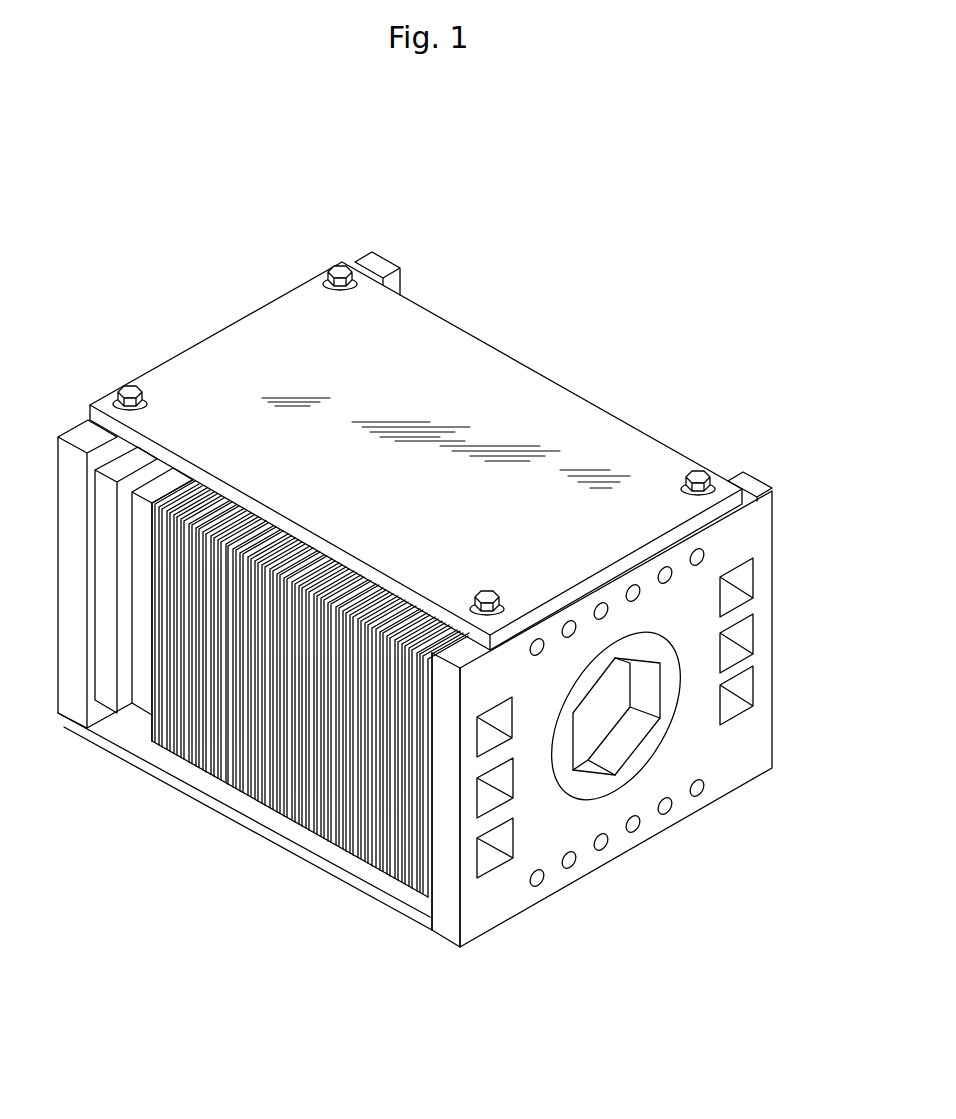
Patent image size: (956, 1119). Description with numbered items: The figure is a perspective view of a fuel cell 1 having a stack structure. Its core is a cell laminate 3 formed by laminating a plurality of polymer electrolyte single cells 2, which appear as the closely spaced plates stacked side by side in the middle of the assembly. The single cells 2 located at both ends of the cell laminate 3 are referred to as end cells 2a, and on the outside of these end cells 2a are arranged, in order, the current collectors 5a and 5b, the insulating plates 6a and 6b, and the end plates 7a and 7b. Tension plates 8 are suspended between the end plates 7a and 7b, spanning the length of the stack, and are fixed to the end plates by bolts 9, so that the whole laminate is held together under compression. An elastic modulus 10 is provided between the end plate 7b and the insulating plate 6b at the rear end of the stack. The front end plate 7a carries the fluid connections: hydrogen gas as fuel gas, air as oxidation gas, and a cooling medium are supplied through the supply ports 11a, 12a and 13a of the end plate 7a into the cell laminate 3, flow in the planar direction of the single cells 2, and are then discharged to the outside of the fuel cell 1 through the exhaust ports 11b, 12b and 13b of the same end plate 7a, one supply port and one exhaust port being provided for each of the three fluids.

The fuel cell 1 is at (168, 303).
The single cell 2 is at (325, 580).
The end cell 2a is at (163, 742).
The cell laminate 3 is at (274, 835).
The current collector 5a is at (415, 895).
The current collector 5b is at (157, 733).
The insulating plate 6a is at (422, 898).
The insulating plate 6b is at (150, 738).
The end plate 7a is at (752, 470).
The end plate 7b is at (385, 262).
The tension plate 8 is at (528, 385).
The bolt 9 is at (338, 270).
The elastic modulus 10 is at (118, 738).
The supply port 11a is at (508, 712).
The exhaust port 11b is at (733, 696).
The supply port 12a is at (495, 860).
The exhaust port 12b is at (733, 590).
The supply port 13a is at (510, 782).
The exhaust port 13b is at (733, 640).